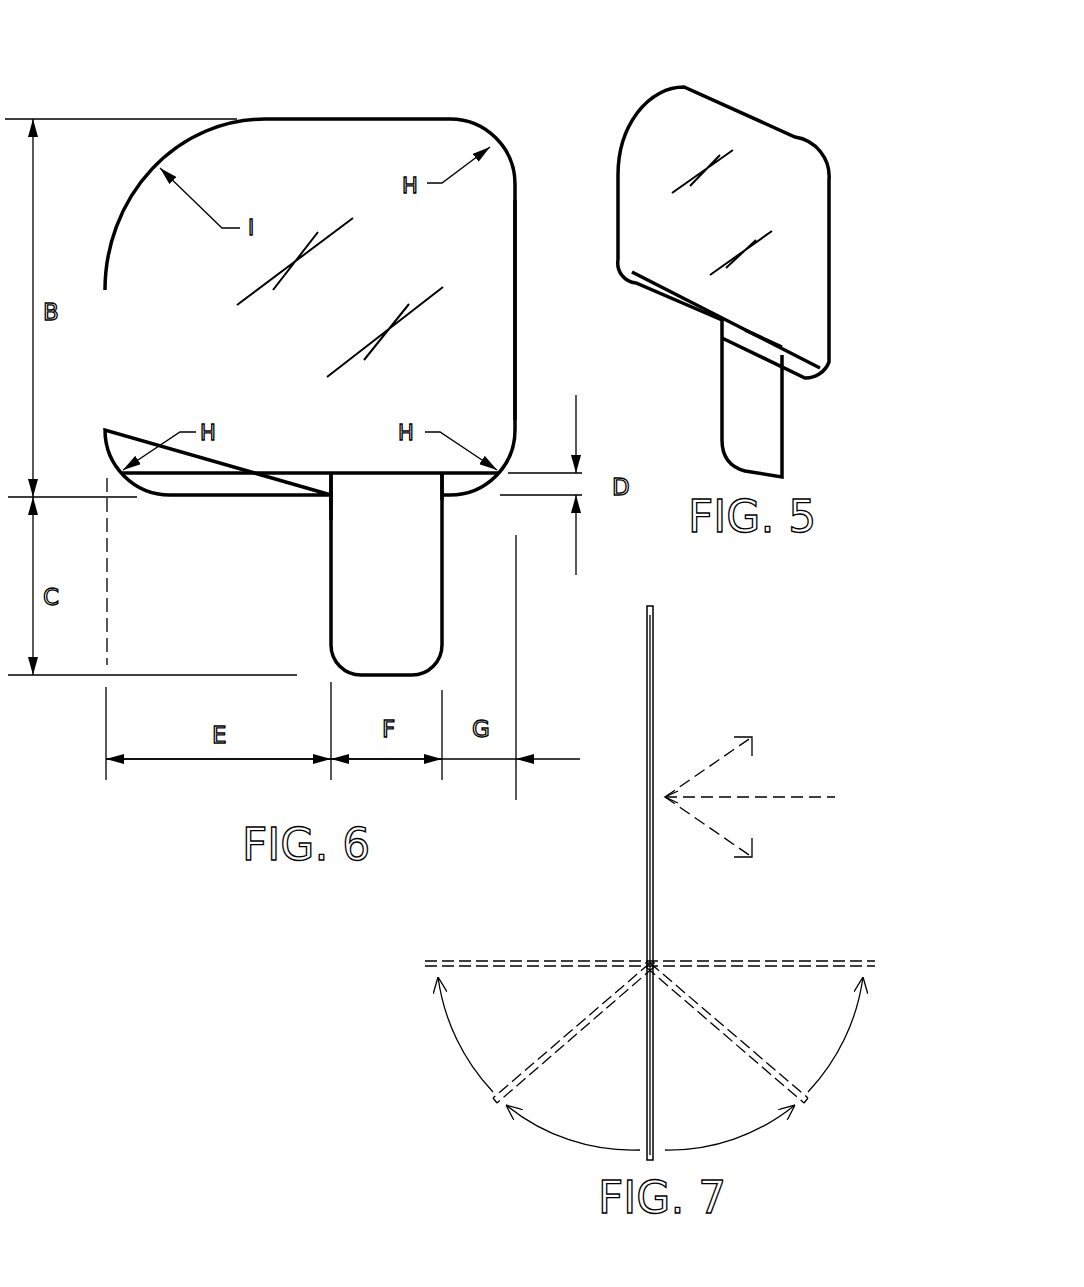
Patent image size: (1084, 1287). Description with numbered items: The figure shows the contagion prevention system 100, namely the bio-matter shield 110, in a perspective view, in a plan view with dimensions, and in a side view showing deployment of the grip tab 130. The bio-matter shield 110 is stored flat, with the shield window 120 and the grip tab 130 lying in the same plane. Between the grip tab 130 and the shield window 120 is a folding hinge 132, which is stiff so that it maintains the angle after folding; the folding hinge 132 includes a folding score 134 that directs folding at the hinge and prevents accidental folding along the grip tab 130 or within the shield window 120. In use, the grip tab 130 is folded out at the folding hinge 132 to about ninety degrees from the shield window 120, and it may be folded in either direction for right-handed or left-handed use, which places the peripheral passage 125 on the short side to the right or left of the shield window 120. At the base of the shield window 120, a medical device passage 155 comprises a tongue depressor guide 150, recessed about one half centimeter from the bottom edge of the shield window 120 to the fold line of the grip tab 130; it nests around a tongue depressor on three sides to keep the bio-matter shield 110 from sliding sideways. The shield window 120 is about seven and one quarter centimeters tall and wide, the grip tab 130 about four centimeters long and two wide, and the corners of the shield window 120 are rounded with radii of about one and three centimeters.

In FIG. 6, the contagion prevention system 100 is at (155, 100).
In FIG. 5, the contagion prevention system 100 is at (731, 78).
In FIG. 7, the contagion prevention system 100 is at (826, 608).
In FIG. 6, the bio-matter shield 110 is at (470, 105).
In FIG. 5, the bio-matter shield 110 is at (790, 115).
In FIG. 7, the bio-matter shield 110 is at (660, 615).
In FIG. 6, the shield window 120 is at (117, 218).
In FIG. 5, the shield window 120 is at (648, 90).
In FIG. 7, the shield window 120 is at (647, 812).
In FIG. 6, the peripheral passage 125 is at (530, 197).
In FIG. 6, the grip tab 130 is at (330, 606).
In FIG. 5, the grip tab 130 is at (782, 408).
In FIG. 7, the grip tab 130 is at (527, 961).
In FIG. 6, the folding hinge 132 is at (352, 471).
In FIG. 5, the folding hinge 132 is at (768, 335).
In FIG. 7, the folding hinge 132 is at (657, 959).
In FIG. 6, the folding score 134 is at (385, 471).
In FIG. 5, the folding score 134 is at (754, 332).
In FIG. 6, the tongue depressor guide 150 is at (329, 508).
In FIG. 6, the medical device passage 155 is at (329, 497).